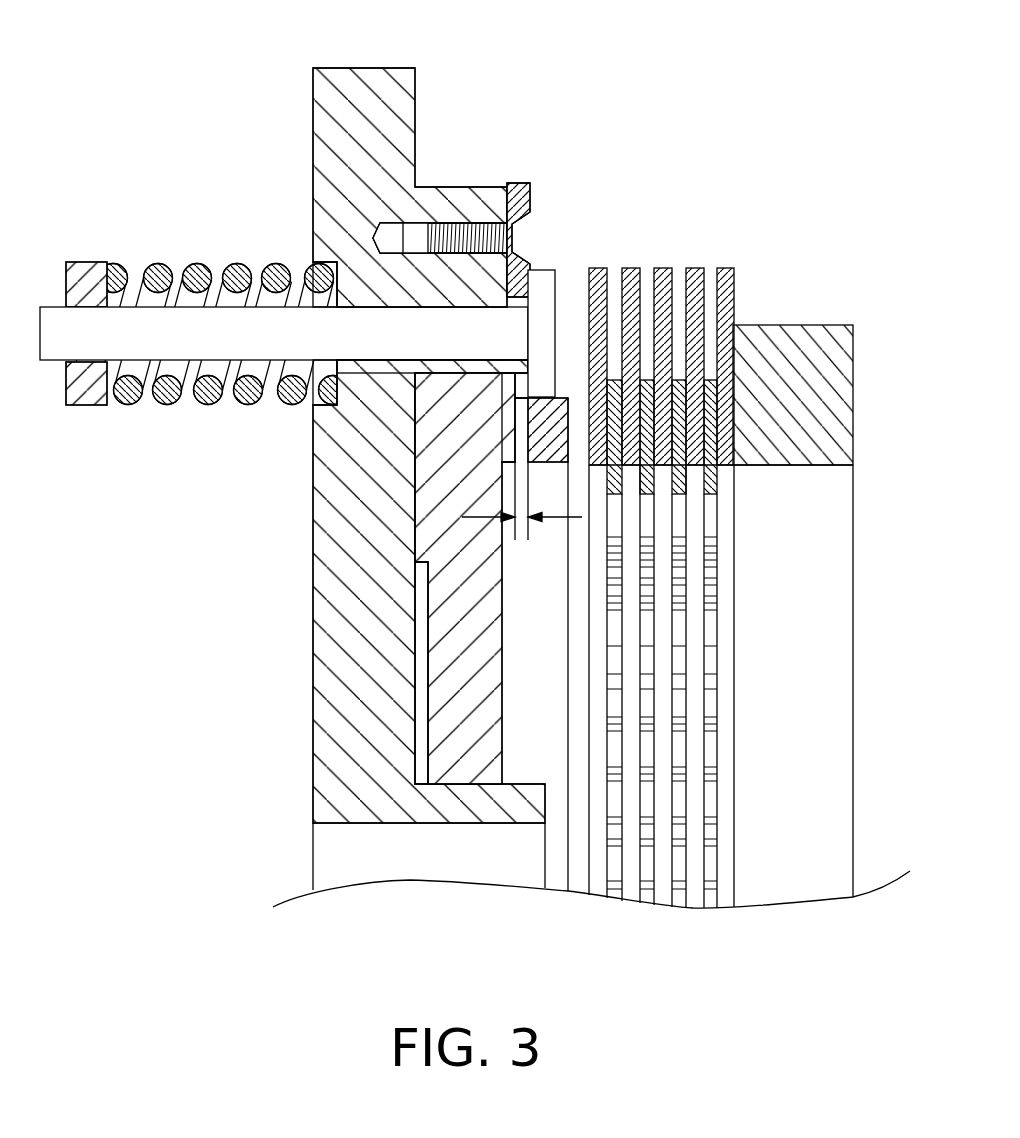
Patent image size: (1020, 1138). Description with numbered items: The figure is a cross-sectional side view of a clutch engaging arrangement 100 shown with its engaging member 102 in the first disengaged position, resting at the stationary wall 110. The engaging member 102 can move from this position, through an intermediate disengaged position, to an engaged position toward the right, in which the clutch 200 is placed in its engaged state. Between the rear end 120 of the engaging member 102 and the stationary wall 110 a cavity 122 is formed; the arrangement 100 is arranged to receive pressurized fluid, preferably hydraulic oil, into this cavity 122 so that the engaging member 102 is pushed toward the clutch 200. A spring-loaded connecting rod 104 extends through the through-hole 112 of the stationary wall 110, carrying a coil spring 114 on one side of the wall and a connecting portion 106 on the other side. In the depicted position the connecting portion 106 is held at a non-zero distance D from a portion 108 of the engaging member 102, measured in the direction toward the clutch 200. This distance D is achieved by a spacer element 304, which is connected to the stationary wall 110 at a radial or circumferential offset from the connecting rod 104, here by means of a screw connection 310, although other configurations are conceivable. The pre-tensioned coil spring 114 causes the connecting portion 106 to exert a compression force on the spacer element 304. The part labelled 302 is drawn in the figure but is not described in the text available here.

The clutch engaging arrangement 100 is at (786, 118).
The engaging member 102 is at (473, 722).
The spring-loaded connecting rod 104 is at (203, 335).
The connecting portion 106 is at (515, 378).
The portion of the engaging member 108 is at (515, 398).
The stationary wall 110 is at (377, 113).
The through-hole 112 is at (394, 361).
The coil spring 114 is at (268, 262).
The rear end 120 is at (413, 541).
The cavity 122 is at (424, 665).
The clutch 200 is at (735, 292).
The stop ring 302 is at (580, 428).
The spacer element 304 is at (523, 193).
The screw connection 310 is at (519, 237).
The distance D is at (523, 520).